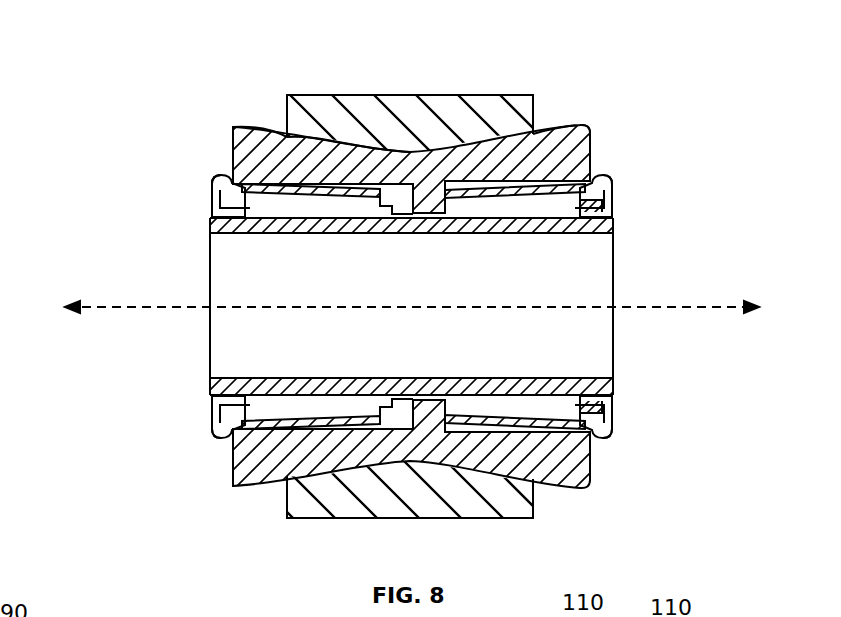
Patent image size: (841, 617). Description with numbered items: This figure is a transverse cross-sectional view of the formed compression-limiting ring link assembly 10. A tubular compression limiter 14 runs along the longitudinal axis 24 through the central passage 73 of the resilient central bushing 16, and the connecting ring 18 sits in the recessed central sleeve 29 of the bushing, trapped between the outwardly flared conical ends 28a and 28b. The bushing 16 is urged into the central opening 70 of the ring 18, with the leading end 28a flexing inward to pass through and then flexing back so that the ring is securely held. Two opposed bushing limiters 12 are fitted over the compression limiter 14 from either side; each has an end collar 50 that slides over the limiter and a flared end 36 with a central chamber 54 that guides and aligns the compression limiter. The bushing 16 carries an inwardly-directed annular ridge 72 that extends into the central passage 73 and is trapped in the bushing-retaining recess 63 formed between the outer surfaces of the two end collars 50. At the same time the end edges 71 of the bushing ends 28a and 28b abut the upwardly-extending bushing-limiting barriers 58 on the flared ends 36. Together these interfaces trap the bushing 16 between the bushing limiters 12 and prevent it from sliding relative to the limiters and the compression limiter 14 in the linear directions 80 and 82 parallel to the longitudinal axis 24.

The compression-limiting ring link assembly 10 is at (207, 55).
The bushing limiter 12 is at (211, 185).
The compression limiter 14 is at (592, 232).
The central bushing 16 is at (540, 150).
The connecting ring 18 is at (531, 95).
The longitudinal axis 24 is at (650, 310).
The leading end 28a is at (600, 146).
The end 28b is at (262, 126).
The central sleeve 29 is at (418, 172).
The flared end 36 is at (212, 433).
The end collar 50 is at (465, 188).
The central chamber 54 is at (604, 210).
The bushing-limiting barrier 58 is at (228, 179).
The bushing-retaining recess 63 is at (430, 205).
The central opening 70 is at (330, 140).
The end edge 71 is at (232, 127).
The annular ridge 72 is at (405, 440).
The central passage 73 is at (217, 179).
The linear direction arrow 80 is at (57, 308).
The linear direction arrow 82 is at (769, 308).